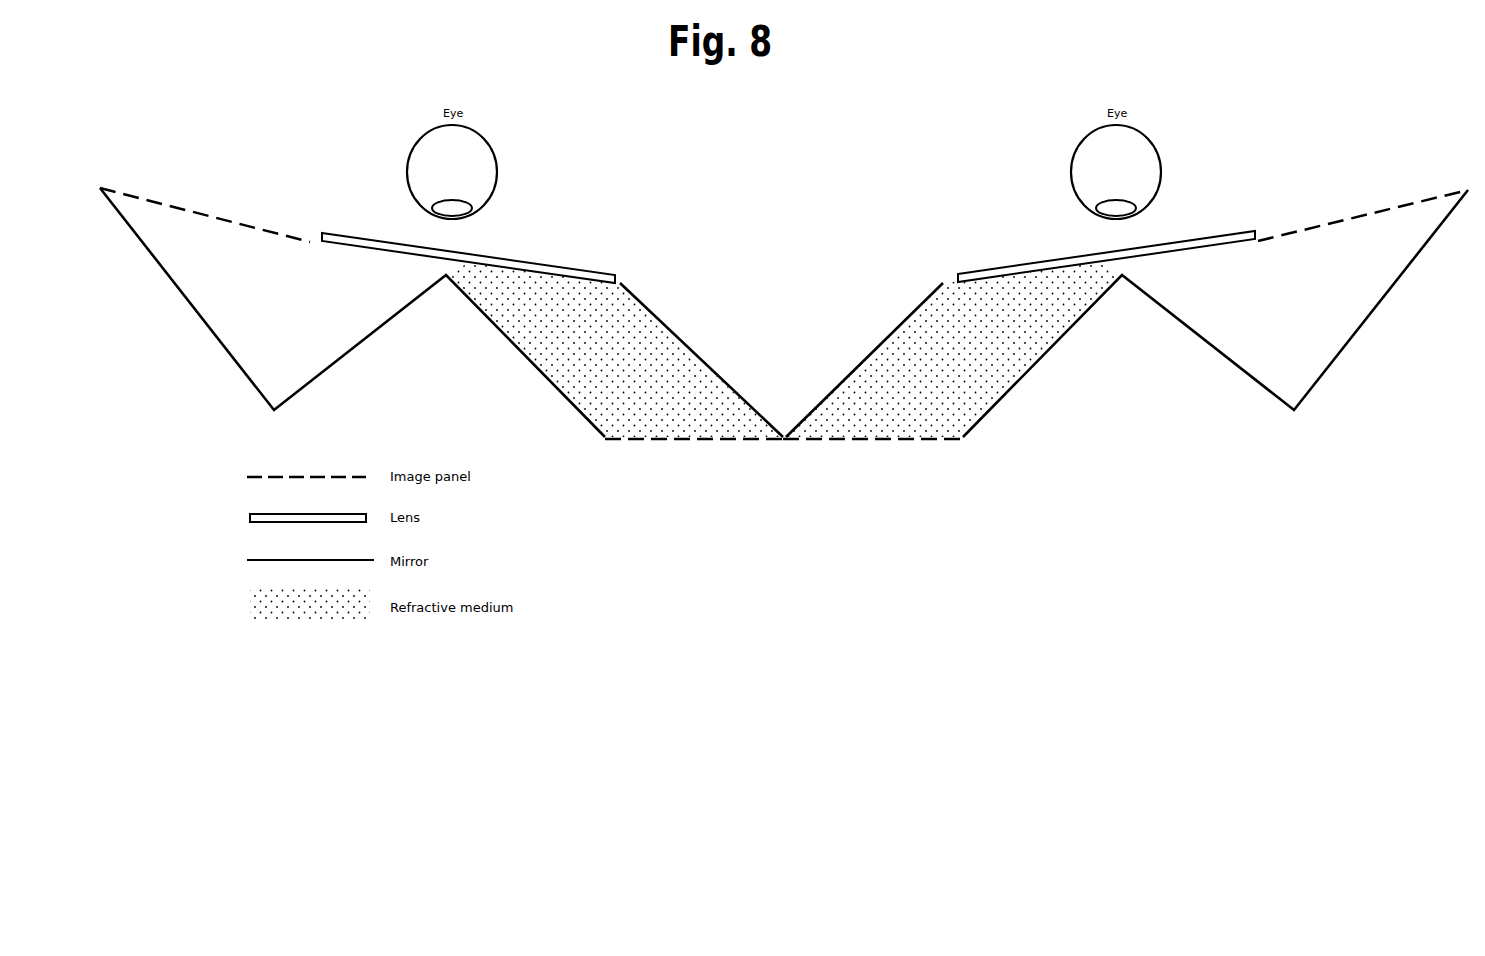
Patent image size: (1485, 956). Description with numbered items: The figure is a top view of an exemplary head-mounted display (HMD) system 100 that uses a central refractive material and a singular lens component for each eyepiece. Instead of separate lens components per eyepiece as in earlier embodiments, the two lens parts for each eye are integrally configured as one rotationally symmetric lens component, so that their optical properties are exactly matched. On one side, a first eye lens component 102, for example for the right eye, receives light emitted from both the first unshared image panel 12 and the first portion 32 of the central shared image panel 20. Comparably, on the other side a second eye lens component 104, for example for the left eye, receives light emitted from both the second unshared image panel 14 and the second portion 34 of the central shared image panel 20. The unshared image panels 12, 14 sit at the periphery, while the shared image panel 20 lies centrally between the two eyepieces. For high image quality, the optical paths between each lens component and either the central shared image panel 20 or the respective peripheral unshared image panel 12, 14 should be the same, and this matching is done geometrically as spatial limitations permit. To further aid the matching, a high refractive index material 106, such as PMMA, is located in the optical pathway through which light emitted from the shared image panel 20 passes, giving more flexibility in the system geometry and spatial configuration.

The head-mounted display system 100 is at (794, 208).
The first unshared image panel 12 is at (257, 227).
The second unshared image panel 14 is at (1322, 225).
The central shared image panel 20 is at (786, 460).
The first portion of the central shared image panel 32 is at (667, 442).
The second portion of the central shared image panel 34 is at (910, 442).
The first eye lens component 102 is at (537, 263).
The second eye lens component 104 is at (1203, 240).
The high refractive index material 106 is at (900, 343).